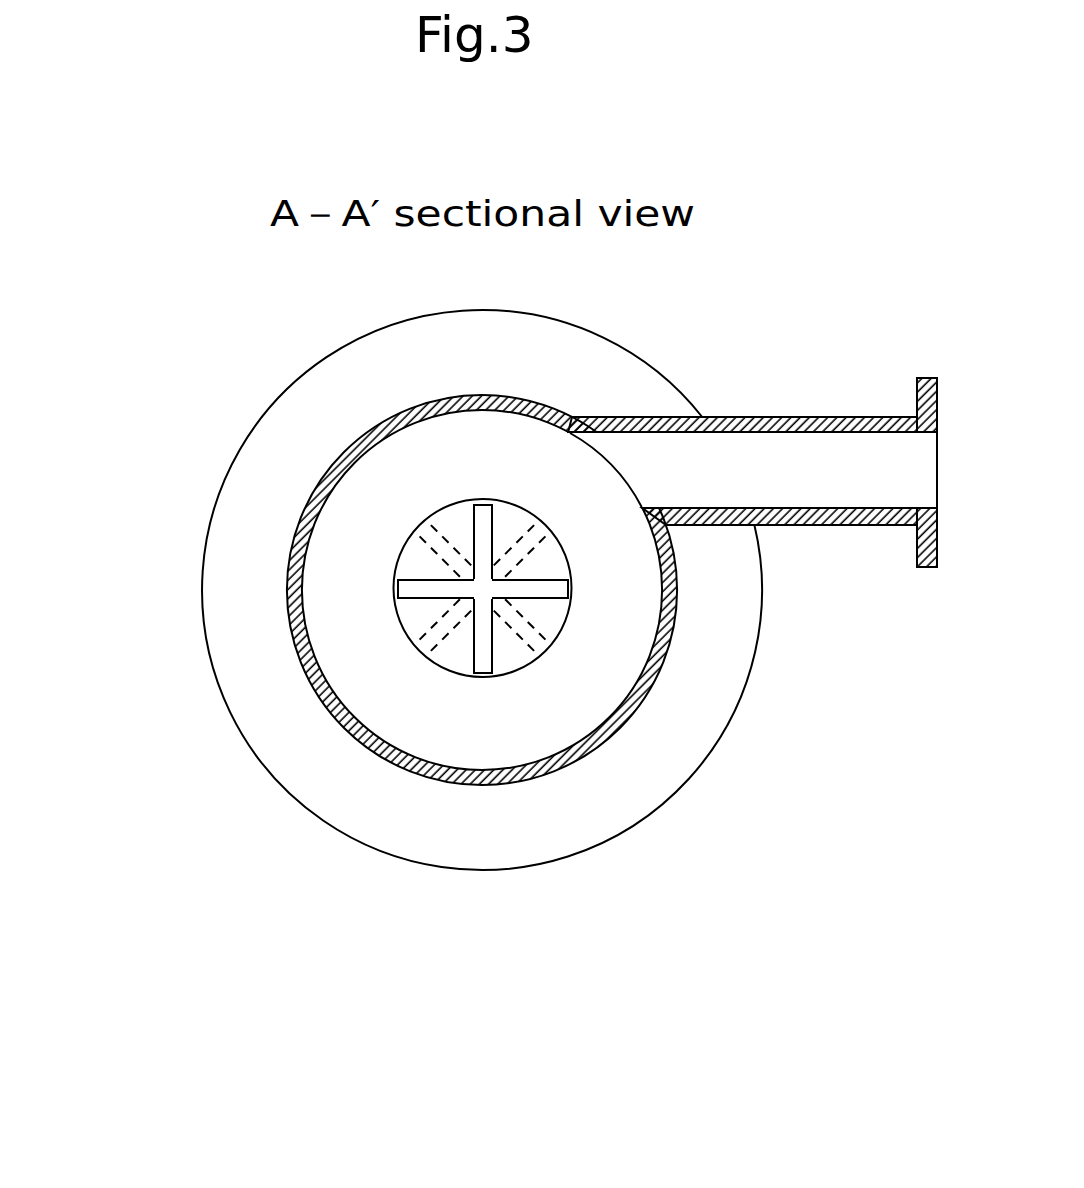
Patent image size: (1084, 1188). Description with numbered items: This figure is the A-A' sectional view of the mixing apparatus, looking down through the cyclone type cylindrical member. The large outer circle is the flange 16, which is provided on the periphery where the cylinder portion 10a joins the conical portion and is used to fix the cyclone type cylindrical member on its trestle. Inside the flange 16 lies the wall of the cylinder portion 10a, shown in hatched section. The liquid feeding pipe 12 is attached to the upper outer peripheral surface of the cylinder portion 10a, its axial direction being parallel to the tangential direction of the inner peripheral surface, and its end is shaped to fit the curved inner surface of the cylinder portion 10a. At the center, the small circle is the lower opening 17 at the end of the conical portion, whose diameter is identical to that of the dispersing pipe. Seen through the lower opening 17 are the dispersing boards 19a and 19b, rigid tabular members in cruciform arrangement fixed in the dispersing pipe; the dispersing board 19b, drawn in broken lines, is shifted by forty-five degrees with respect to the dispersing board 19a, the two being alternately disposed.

The flange 16 is at (350, 807).
The cylinder portion 10a is at (473, 783).
The liquid feeding pipe 12 is at (813, 417).
The lower opening 17 is at (447, 505).
The dispersing board 19a is at (543, 585).
The dispersing board 19b is at (423, 548).